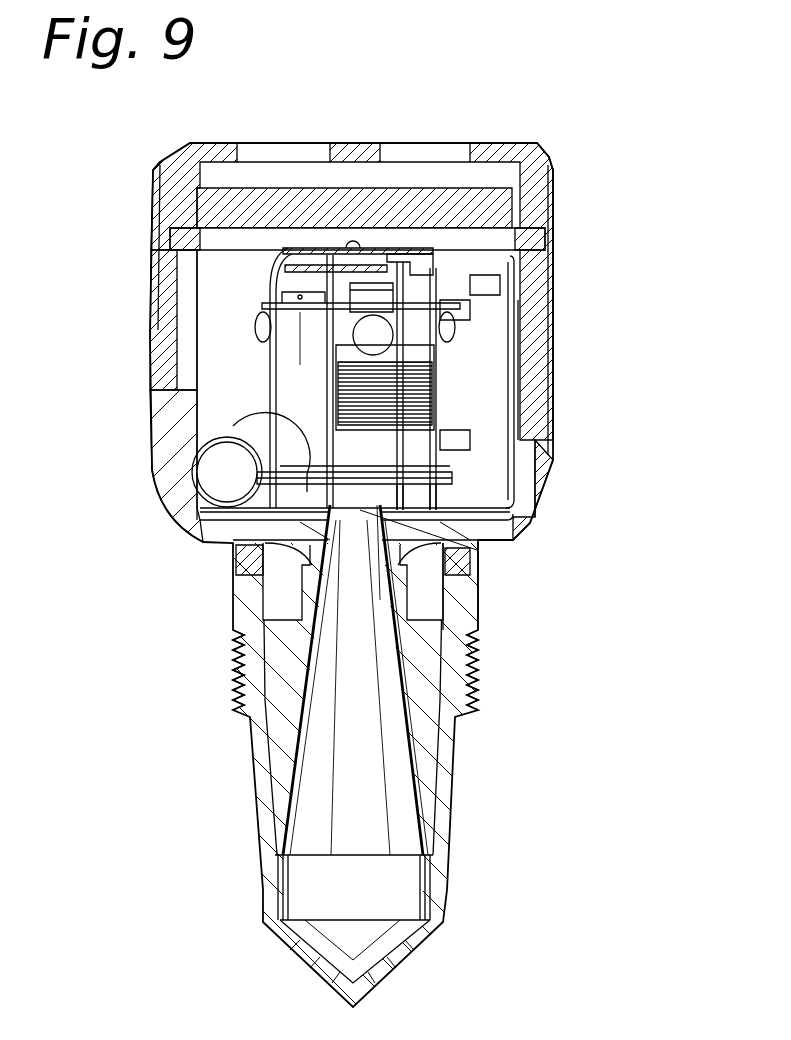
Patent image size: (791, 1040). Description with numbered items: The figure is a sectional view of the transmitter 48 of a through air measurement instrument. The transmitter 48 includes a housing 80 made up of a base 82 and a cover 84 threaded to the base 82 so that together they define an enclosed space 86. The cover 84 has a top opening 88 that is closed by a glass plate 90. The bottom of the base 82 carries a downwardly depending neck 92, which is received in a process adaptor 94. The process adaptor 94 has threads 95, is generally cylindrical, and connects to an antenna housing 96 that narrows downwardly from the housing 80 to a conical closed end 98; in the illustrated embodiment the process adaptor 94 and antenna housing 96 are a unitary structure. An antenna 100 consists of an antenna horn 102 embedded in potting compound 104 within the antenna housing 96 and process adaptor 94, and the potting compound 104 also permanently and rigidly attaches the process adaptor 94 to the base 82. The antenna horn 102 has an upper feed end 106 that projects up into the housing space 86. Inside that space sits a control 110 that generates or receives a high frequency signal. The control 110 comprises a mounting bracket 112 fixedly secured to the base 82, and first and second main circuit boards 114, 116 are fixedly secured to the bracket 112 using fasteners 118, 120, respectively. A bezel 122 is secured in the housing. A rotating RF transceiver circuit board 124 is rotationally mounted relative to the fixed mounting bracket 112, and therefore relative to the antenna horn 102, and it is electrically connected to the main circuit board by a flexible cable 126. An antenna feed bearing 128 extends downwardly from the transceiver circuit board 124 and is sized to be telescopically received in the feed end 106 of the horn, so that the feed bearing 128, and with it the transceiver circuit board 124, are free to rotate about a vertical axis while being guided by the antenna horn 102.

The transmitter 48 is at (576, 159).
The housing 80 is at (152, 492).
The base 82 is at (510, 521).
The cover 84 is at (543, 263).
The enclosed space 86 is at (246, 399).
The top opening 88 is at (297, 178).
The glass plate 90 is at (403, 205).
The neck 92 is at (235, 612).
The process adaptor 94 is at (478, 601).
The threads 95 is at (236, 690).
The antenna housing 96 is at (433, 826).
The conical closed end 98 is at (403, 965).
The antenna 100 is at (246, 804).
The antenna horn 102 is at (435, 797).
The potting compound 104 is at (433, 721).
The upper feed end 106 is at (322, 556).
The control 110 is at (447, 402).
The mounting bracket 112 is at (440, 347).
The first main circuit board 114 is at (440, 378).
The second main circuit board 116 is at (265, 318).
The fasteners 118 is at (455, 470).
The fasteners 120 is at (300, 322).
The bezel 122 is at (543, 203).
The rotating RF transceiver circuit board 124 is at (445, 486).
The flexible cable 126 is at (490, 406).
The antenna feed bearing 128 is at (395, 550).